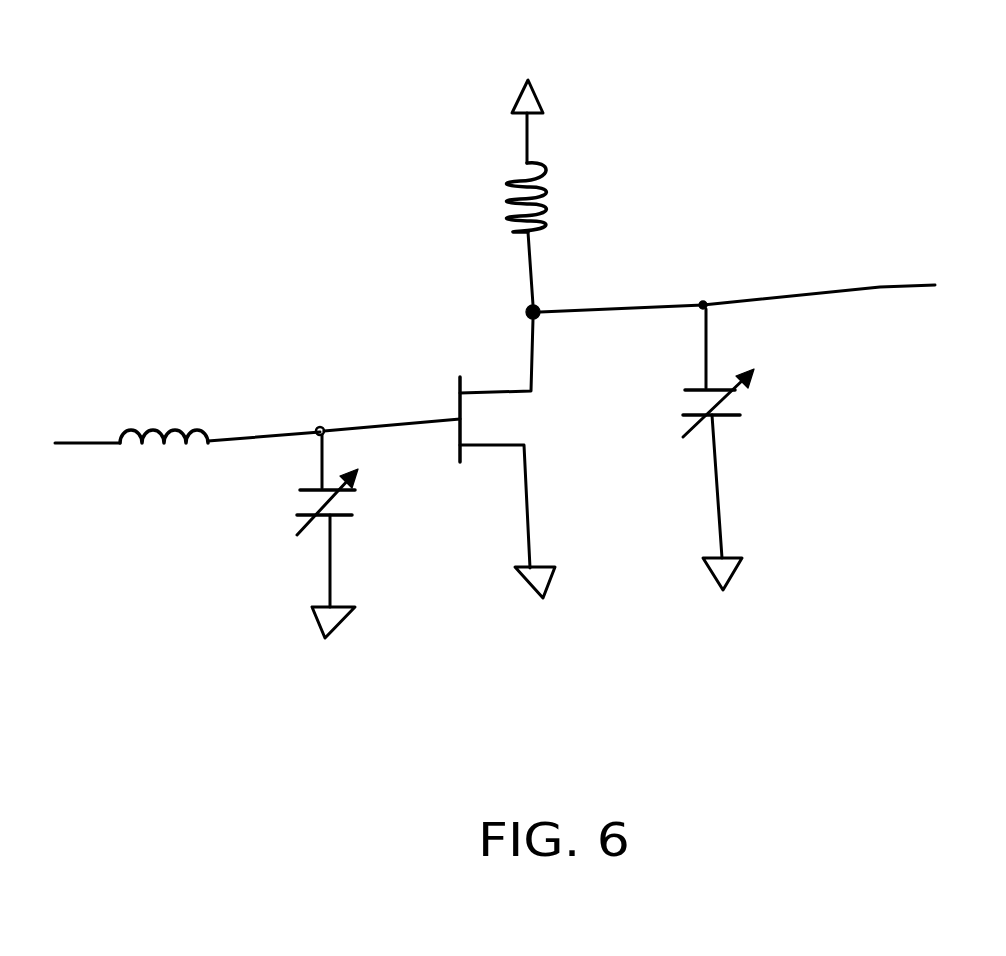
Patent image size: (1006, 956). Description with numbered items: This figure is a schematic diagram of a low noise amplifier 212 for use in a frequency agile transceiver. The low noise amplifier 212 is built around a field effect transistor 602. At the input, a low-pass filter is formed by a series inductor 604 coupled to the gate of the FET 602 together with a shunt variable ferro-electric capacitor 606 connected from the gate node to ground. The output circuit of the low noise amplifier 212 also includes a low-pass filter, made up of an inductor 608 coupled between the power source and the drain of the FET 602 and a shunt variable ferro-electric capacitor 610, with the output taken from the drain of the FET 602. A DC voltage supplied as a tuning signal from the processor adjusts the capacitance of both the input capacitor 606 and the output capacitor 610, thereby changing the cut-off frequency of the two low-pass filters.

The low noise amplifier 212 is at (864, 97).
The field effect transistor 602 is at (456, 395).
The series inductor 604 is at (187, 404).
The shunt variable ferro-electric capacitor 606 is at (356, 536).
The inductor 608 is at (564, 192).
The shunt variable ferro-electric capacitor 610 is at (737, 449).